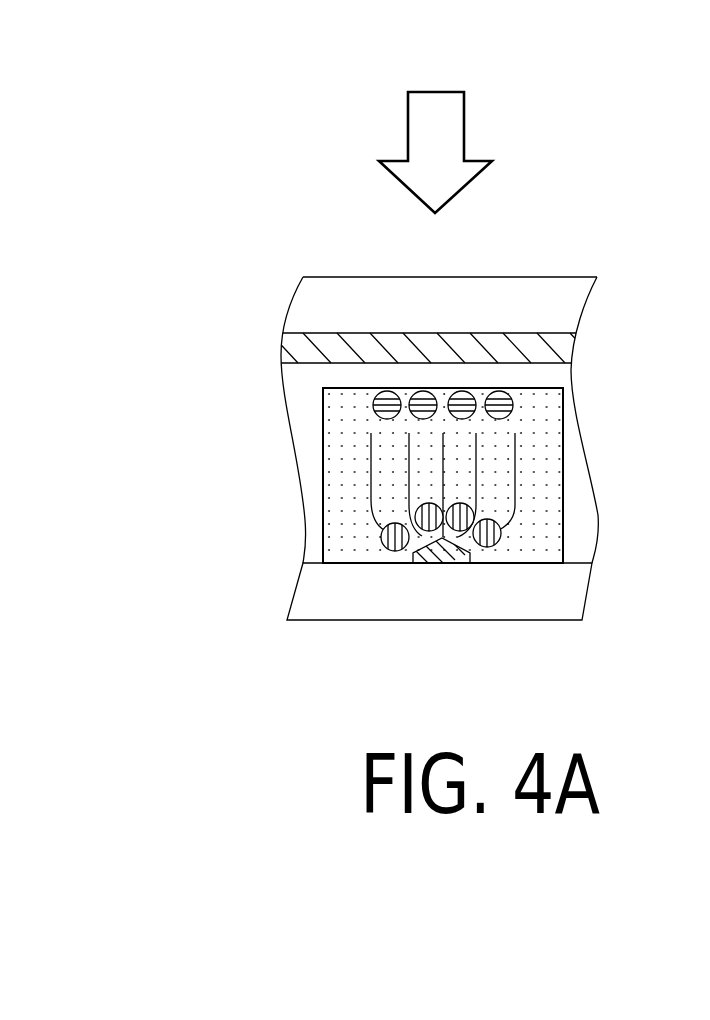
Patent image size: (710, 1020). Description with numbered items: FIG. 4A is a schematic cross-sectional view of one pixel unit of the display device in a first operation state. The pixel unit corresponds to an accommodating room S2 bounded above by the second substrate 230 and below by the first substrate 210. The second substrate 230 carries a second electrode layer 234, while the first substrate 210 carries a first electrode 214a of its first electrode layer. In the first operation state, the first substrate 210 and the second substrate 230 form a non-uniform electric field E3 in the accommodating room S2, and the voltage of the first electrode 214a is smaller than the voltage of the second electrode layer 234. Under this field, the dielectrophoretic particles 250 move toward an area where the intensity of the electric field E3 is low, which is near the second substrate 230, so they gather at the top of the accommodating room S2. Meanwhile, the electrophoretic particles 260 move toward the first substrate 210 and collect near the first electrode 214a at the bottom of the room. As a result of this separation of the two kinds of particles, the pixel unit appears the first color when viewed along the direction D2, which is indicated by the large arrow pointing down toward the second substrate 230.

The direction D2 is at (465, 122).
The second substrate 230 is at (277, 300).
The second electrode layer 234 is at (287, 348).
The first substrate 210 is at (283, 588).
The accommodating room S2 is at (535, 413).
The electric field E3 is at (518, 458).
The dielectrophoretic particles 250 is at (387, 402).
The electrophoretic particles 260 is at (392, 547).
The first electrode 214a is at (441, 560).